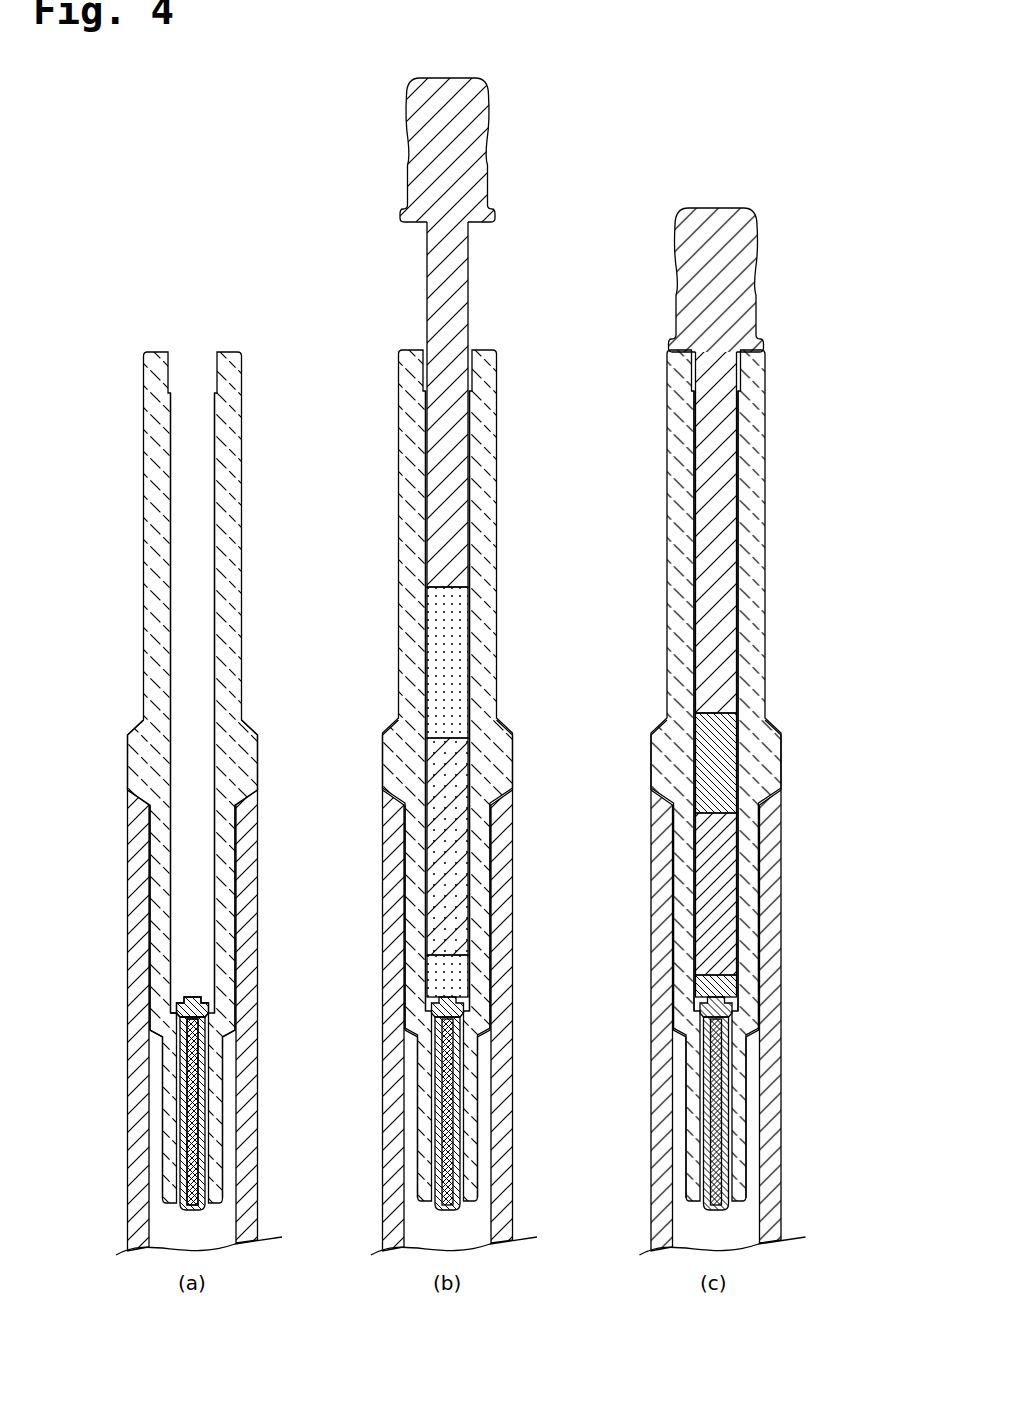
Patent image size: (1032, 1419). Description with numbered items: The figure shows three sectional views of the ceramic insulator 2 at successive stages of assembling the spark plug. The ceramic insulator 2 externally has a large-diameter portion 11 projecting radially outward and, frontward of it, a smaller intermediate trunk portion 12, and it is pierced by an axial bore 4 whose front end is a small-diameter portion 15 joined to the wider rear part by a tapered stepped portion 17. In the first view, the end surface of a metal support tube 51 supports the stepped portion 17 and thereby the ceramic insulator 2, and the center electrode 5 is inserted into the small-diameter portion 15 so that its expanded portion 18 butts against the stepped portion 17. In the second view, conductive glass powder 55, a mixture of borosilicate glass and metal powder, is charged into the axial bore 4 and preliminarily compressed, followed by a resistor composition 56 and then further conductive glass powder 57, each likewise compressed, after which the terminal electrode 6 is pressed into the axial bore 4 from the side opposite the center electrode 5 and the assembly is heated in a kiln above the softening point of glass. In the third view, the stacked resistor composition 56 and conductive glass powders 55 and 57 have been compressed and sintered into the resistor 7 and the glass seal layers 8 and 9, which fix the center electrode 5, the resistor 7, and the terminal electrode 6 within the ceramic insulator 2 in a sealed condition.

The ceramic insulator 2 is at (252, 475).
The axial bore 4 is at (213, 565).
The center electrode 5 is at (209, 1058).
The terminal electrode 6 is at (472, 282).
The resistor 7 is at (725, 828).
The glass seal layer 8 is at (736, 990).
The glass seal layer 9 is at (722, 725).
The large-diameter portion 11 is at (258, 757).
The intermediate trunk portion 12 is at (236, 898).
The small-diameter portion 15 is at (205, 1093).
The stepped portion 17 is at (172, 1009).
The expanded portion 18 is at (206, 1001).
The support tube 51 is at (258, 1140).
The conductive glass powder 55 is at (460, 965).
The resistor composition 56 is at (458, 827).
The conductive glass powder 57 is at (458, 648).